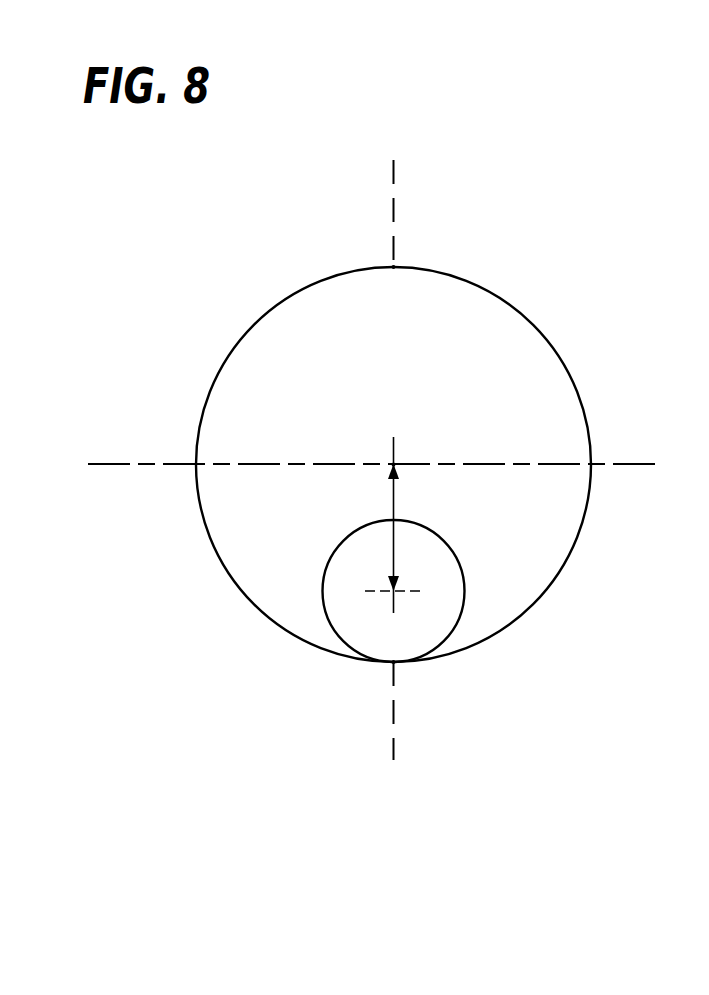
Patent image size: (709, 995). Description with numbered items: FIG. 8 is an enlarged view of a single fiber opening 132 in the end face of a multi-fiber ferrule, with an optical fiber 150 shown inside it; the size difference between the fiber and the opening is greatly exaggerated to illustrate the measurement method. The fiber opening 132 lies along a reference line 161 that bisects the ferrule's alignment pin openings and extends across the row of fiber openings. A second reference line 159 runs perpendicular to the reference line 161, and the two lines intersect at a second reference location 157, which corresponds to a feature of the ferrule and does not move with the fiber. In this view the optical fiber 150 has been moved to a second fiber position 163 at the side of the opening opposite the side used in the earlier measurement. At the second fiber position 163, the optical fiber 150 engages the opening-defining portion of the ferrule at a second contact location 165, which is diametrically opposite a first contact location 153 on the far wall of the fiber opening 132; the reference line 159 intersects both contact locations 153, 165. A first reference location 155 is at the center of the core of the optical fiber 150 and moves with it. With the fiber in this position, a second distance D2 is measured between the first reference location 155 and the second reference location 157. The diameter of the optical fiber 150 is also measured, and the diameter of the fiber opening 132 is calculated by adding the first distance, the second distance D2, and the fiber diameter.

The fiber opening 132 is at (510, 304).
The optical fiber 150 is at (445, 542).
The first contact location 153 is at (394, 267).
The first reference location 155 is at (394, 591).
The second reference location 157 is at (394, 463).
The reference line 159 is at (394, 237).
The reference line 161 is at (146, 463).
The second fiber position 163 is at (430, 678).
The second contact location 165 is at (393, 663).
The second distance D2 is at (393, 497).